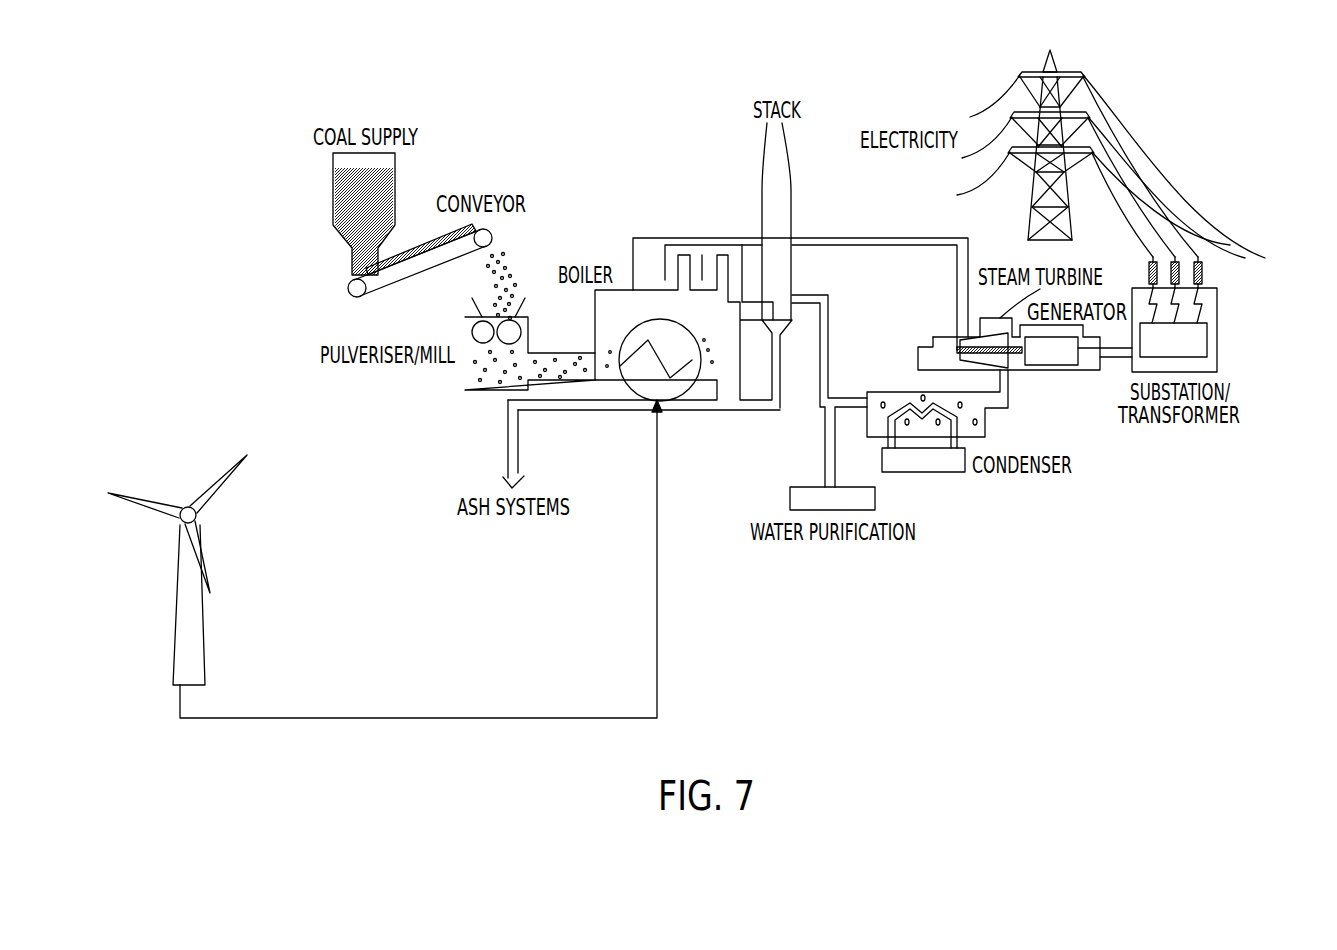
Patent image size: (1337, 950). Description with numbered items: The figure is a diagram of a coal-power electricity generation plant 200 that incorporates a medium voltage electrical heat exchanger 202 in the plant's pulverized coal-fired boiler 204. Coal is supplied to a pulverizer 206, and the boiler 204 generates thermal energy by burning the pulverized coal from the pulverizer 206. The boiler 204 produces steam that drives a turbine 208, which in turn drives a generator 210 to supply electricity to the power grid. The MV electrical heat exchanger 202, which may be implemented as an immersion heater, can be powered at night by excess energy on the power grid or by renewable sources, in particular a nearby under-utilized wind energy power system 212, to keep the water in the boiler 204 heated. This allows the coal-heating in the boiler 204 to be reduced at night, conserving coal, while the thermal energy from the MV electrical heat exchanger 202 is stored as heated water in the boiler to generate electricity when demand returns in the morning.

The coal-power electricity generation plant 200 is at (846, 74).
The MV electrical heat exchanger 202 is at (673, 388).
The pulverized coal-fired boiler 204 is at (622, 276).
The pulverizer 206 is at (467, 398).
The turbine 208 is at (926, 333).
The generator 210 is at (1062, 382).
The wind energy power system 212 is at (204, 470).